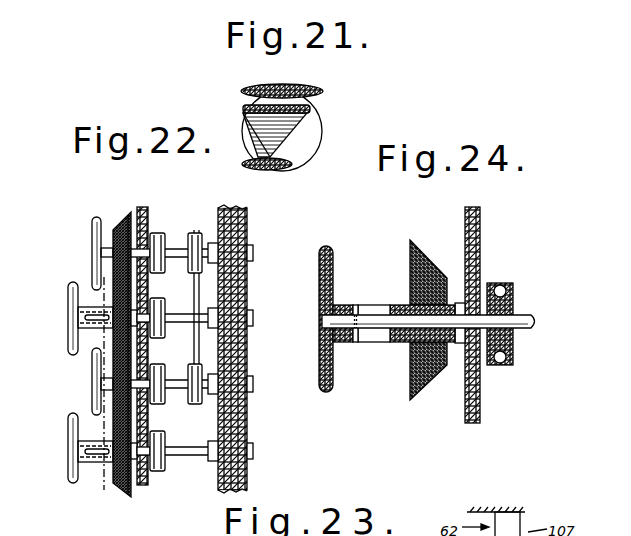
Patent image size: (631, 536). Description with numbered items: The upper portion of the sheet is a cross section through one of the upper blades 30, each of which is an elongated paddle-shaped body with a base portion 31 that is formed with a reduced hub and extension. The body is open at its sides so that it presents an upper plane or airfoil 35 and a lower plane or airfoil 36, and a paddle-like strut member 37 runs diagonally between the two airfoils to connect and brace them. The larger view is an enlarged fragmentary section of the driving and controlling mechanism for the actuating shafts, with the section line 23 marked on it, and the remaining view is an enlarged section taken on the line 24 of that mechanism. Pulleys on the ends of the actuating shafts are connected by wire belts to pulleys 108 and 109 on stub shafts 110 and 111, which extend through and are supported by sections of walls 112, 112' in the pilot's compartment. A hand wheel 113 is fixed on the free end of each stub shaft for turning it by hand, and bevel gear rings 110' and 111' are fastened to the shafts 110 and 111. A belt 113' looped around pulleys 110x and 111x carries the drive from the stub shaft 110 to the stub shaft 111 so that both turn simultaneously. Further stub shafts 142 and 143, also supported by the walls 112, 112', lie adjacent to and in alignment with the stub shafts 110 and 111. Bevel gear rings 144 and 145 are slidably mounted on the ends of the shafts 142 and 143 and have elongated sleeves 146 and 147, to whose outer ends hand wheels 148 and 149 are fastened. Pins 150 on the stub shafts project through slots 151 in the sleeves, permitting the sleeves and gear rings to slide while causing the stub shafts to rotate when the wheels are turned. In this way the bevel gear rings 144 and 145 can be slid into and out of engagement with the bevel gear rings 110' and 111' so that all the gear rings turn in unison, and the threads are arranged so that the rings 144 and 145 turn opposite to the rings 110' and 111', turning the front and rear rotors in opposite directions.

In FIG. 21, the upper blade 30 is at (320, 96).
In FIG. 21, the base portion 31 is at (315, 128).
In FIG. 21, the upper plane 35 is at (280, 86).
In FIG. 21, the lower plane 36 is at (265, 165).
In FIG. 21, the strut member 37 is at (258, 107).
In FIG. 22, the pulley 108 is at (168, 238).
In FIG. 22, the pulley 109 is at (162, 399).
In FIG. 22, the stub shaft 110 is at (107, 345).
In FIG. 22, the bevel gear ring 110' is at (85, 260).
In FIG. 22, the pulley 110x is at (207, 233).
In FIG. 22, the stub shaft 111 is at (169, 354).
In FIG. 22, the bevel gear ring 111' is at (79, 393).
In FIG. 22, the pulley 111x is at (204, 398).
In FIG. 22, the wall section 112 is at (251, 349).
In FIG. 22, the wall section 112' is at (123, 368).
In FIG. 24, the wall section 112' is at (494, 315).
In FIG. 22, the hand wheel 113 is at (70, 316).
In FIG. 22, the belt 113' is at (244, 315).
In FIG. 22, the stub shaft 142 is at (204, 324).
In FIG. 24, the stub shaft 142 is at (522, 316).
In FIG. 22, the stub shaft 143 is at (190, 453).
In FIG. 22, the bevel gear ring 144 is at (110, 337).
In FIG. 24, the bevel gear ring 144 is at (412, 382).
In FIG. 22, the bevel gear ring 145 is at (115, 483).
In FIG. 24, the sleeve 146 is at (397, 304).
In FIG. 22, the sleeve 147 is at (88, 463).
In FIG. 22, the hand wheel 148 is at (72, 325).
In FIG. 24, the hand wheel 148 is at (320, 293).
In FIG. 22, the hand wheel 149 is at (70, 438).
In FIG. 22, the pin 150 is at (88, 447).
In FIG. 24, the pin 150 is at (358, 305).
In FIG. 22, the slot 151 is at (100, 461).
In FIG. 24, the slot 151 is at (373, 334).
In FIG. 22, the section line 23 is at (172, 226).
In FIG. 22, the section line 24 is at (62, 317).